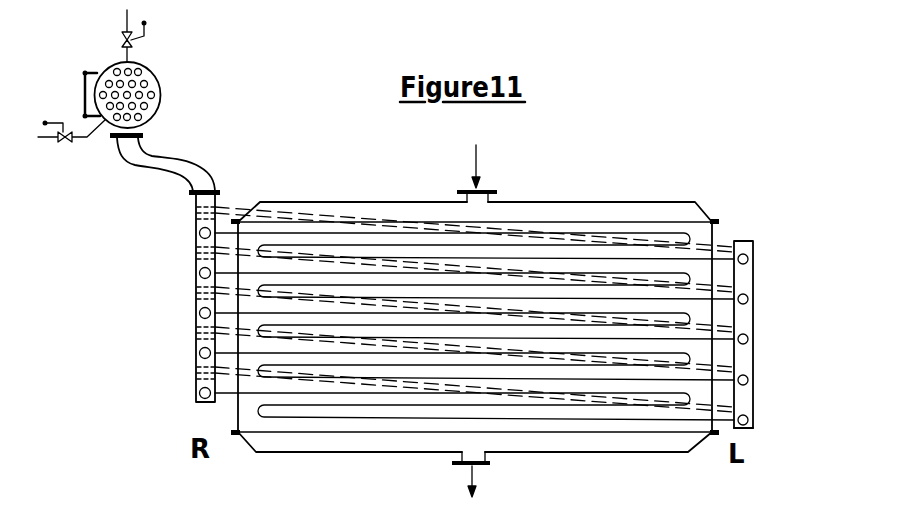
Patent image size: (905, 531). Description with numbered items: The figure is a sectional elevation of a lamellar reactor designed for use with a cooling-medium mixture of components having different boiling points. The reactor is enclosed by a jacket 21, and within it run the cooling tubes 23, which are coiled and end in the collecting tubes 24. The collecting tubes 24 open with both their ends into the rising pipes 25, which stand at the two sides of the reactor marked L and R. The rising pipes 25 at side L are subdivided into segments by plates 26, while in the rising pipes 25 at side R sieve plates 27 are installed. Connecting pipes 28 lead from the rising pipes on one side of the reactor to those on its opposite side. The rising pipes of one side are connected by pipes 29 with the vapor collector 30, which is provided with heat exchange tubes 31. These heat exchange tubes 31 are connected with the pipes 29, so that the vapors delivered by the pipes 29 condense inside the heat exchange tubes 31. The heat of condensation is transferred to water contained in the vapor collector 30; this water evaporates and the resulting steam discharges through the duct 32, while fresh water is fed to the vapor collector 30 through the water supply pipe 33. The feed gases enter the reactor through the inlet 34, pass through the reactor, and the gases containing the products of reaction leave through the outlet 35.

The jacket 21 is at (705, 238).
The cooling tubes 23 is at (257, 395).
The collecting tubes 24 is at (744, 298).
The rising pipes 25 is at (197, 230).
The plates 26 is at (748, 348).
The sieve plates 27 is at (197, 268).
The connecting pipes 28 is at (244, 203).
The pipes 29 is at (158, 150).
The vapor collector 30 is at (161, 95).
The heat exchange tubes 31 is at (141, 72).
The duct 32 is at (147, 23).
The water supply pipe 33 is at (49, 139).
The inlet 34 is at (481, 189).
The outlet 35 is at (478, 479).